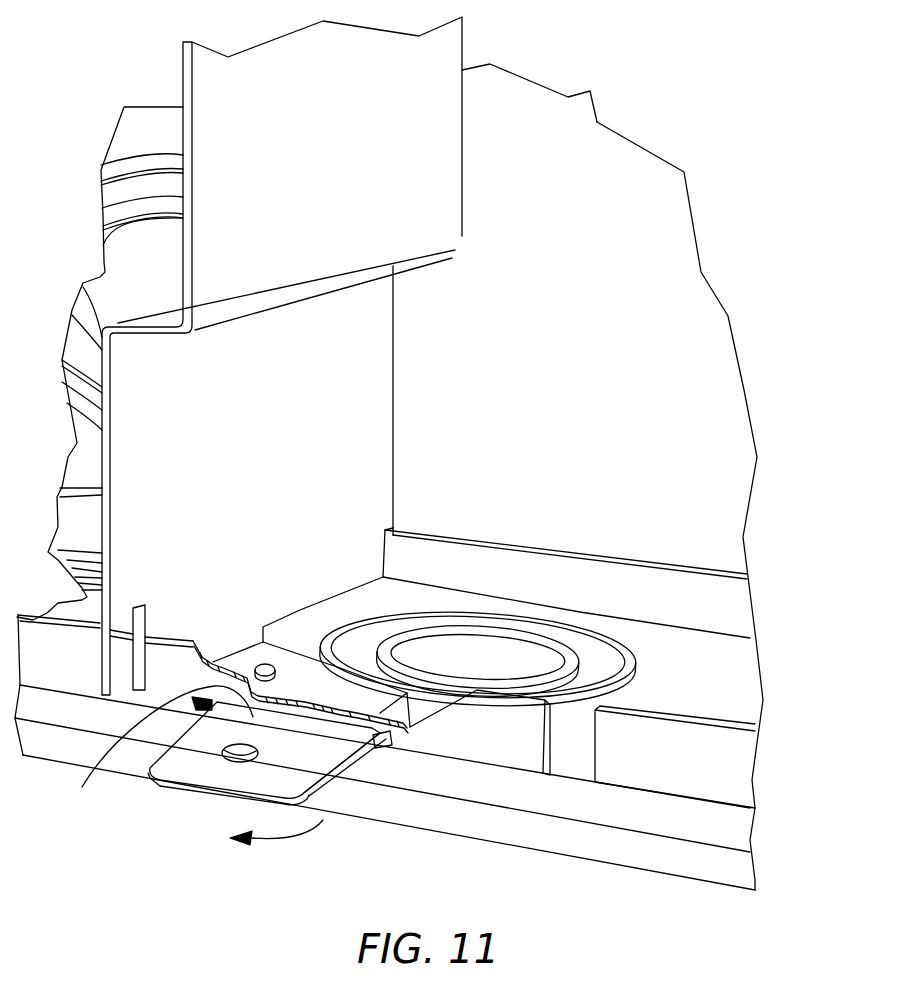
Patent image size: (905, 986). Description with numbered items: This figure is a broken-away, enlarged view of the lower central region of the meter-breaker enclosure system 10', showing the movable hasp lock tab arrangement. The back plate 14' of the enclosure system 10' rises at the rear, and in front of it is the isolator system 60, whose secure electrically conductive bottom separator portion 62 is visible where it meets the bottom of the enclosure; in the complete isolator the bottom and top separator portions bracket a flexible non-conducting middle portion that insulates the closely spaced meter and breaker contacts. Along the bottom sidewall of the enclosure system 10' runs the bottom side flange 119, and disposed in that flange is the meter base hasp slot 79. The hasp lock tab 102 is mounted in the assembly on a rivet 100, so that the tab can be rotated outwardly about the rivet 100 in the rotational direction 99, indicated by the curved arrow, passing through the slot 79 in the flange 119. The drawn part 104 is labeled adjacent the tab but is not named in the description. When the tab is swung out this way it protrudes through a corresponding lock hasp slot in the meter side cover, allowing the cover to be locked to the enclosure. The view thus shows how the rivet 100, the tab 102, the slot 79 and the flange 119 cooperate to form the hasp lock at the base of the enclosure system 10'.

The meter-breaker enclosure system 10' is at (611, 151).
The back plate 14' is at (702, 506).
The isolator system 60 is at (357, 364).
The bottom separator portion 62 is at (160, 548).
The rivet 100 is at (272, 668).
The bottom side flange 119 is at (70, 657).
The tab plate 104 is at (222, 738).
The hasp lock tab 102 is at (320, 783).
The meter base hasp slot 79 is at (385, 746).
The rotational direction 99 is at (275, 840).